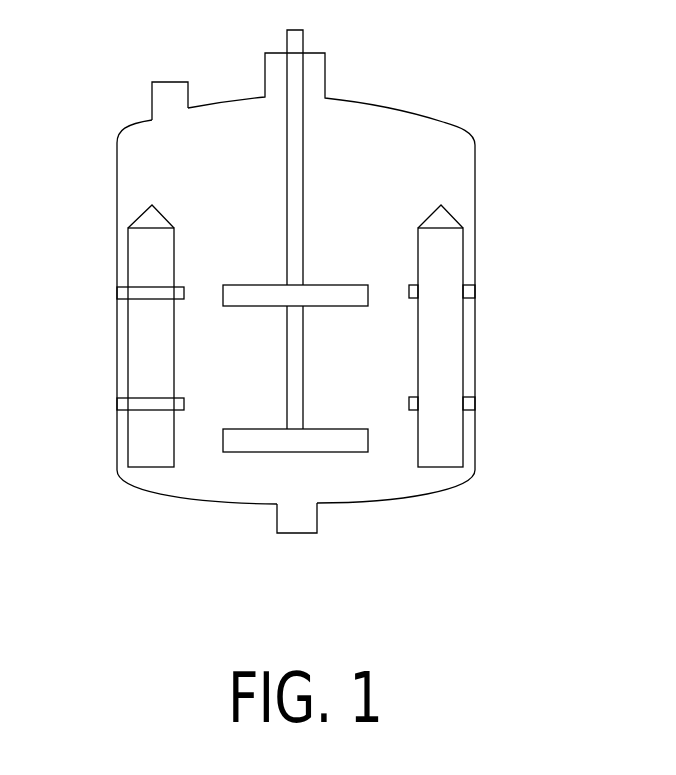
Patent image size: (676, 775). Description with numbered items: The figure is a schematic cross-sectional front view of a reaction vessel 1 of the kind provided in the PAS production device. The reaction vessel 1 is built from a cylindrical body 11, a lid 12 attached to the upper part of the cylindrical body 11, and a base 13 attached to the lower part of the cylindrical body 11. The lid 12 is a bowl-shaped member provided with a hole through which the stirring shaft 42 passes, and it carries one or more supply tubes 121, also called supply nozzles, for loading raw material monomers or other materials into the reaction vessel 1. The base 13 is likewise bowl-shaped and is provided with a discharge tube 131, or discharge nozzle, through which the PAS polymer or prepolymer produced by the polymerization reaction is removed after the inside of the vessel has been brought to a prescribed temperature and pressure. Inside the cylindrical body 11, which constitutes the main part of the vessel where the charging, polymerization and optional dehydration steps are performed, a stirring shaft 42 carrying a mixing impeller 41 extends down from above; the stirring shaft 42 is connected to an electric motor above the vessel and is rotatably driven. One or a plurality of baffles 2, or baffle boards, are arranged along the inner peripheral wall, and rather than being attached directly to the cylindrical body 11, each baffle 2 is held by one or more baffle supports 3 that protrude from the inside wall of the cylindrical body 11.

The reaction vessel 1 is at (484, 46).
The cylindrical body 11 is at (477, 318).
The lid 12 is at (329, 88).
The supply tube 121 is at (170, 82).
The base 13 is at (300, 524).
The discharge tube 131 is at (317, 526).
The baffle 2 is at (135, 346).
The baffle support 3 is at (120, 296).
The mixing impeller 41 is at (324, 300).
The stirring shaft 42 is at (304, 173).